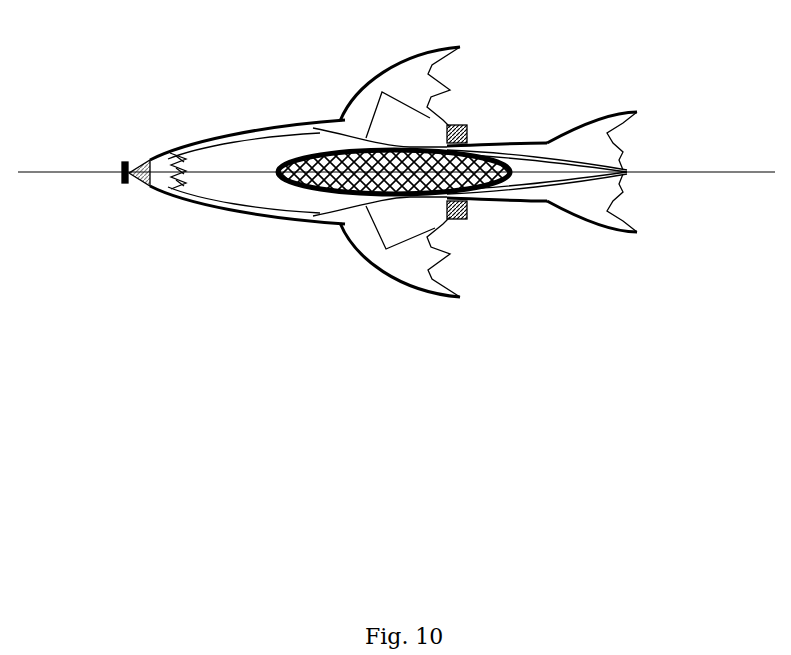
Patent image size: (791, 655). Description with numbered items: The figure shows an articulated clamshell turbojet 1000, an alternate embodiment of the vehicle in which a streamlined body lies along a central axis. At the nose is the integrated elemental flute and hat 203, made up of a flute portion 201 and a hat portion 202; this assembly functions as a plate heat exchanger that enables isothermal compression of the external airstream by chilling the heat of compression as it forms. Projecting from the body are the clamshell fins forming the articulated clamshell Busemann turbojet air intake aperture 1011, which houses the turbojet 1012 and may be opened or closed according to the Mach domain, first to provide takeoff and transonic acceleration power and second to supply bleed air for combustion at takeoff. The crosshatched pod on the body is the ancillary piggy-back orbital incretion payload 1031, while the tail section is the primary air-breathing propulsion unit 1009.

The articulated clamshell turbojet 1000 is at (292, 297).
The flute portion 201 is at (143, 160).
The hat portion 202 is at (163, 152).
The integrated elemental flute and hat 203 is at (153, 188).
The articulated clamshell Busemann turbojet air intake aperture 1011 is at (346, 118).
The turbojet 1012 is at (467, 124).
The primary air-breathing propulsion unit 1009 is at (624, 168).
The ancillary/piggy-back orbital incretion payload 1031 is at (500, 163).